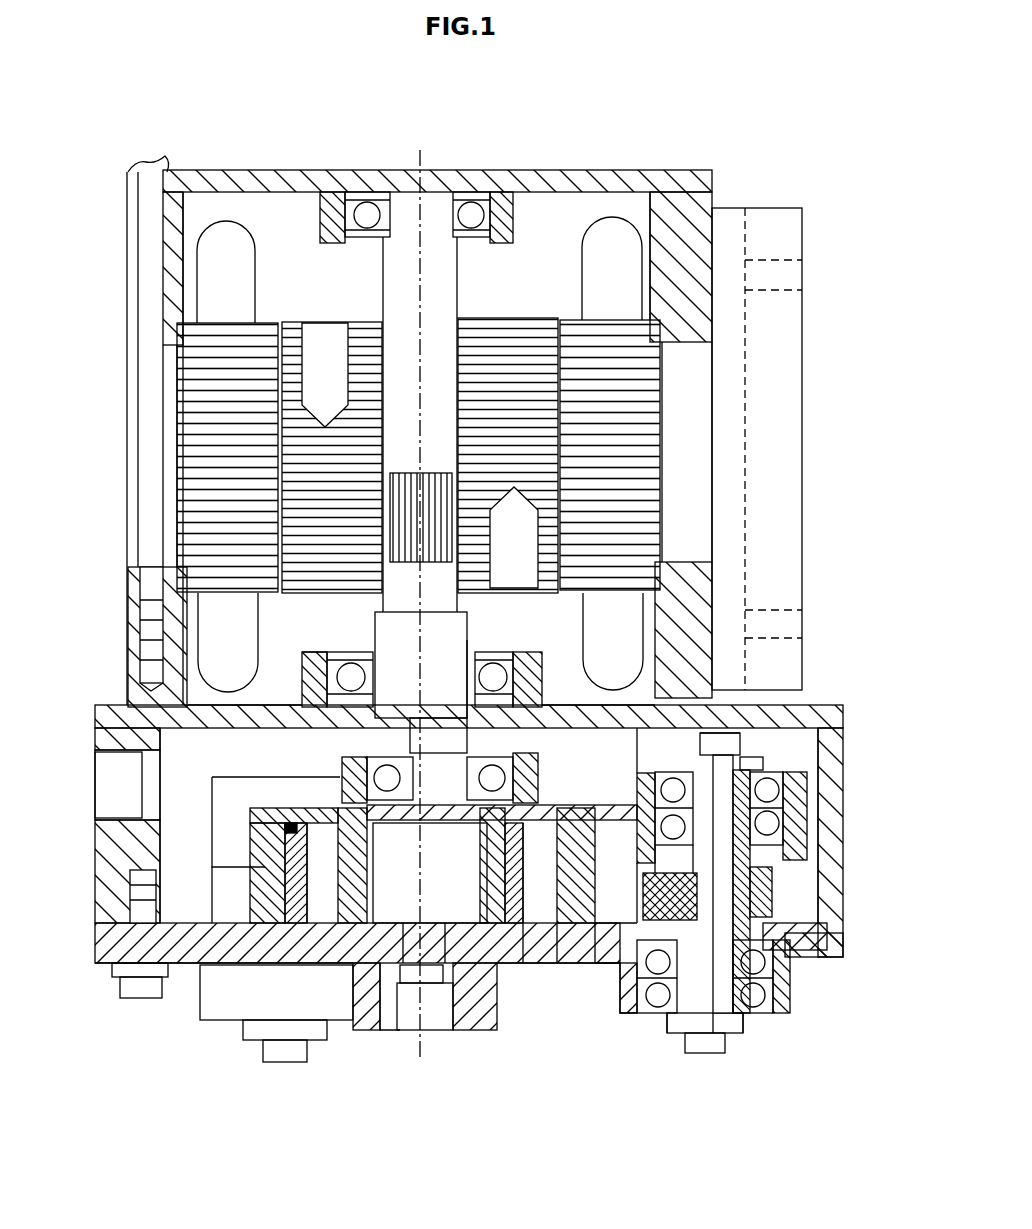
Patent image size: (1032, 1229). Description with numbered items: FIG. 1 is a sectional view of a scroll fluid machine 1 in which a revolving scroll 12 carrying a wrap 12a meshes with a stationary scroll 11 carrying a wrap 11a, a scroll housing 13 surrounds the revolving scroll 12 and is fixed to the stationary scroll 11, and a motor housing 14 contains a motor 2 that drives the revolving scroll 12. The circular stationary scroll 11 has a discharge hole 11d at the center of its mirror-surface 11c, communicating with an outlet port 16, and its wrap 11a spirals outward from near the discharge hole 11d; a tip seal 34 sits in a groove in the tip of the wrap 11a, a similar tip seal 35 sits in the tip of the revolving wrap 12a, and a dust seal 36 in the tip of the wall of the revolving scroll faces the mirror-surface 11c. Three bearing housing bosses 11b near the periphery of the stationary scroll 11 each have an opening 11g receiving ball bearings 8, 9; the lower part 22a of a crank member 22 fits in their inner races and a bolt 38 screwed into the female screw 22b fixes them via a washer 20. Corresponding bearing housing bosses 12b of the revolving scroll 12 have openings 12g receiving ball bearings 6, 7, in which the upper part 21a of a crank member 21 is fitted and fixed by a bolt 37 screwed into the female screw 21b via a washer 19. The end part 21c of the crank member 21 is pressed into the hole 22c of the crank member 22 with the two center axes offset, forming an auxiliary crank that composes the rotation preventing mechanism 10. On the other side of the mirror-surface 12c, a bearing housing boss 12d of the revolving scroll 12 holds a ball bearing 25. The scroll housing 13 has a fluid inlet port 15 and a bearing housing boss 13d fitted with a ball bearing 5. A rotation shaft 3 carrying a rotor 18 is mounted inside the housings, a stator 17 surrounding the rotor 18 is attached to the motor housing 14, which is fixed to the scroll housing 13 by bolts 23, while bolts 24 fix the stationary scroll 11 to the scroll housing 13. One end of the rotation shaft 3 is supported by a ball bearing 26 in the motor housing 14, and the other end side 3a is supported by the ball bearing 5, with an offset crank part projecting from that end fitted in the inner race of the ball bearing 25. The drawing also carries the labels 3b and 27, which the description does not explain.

The scroll fluid machine 1 is at (632, 128).
The motor 2 is at (690, 393).
The rotation shaft 3 is at (440, 290).
The other end side of the rotation shaft 3a is at (415, 695).
The shaft step 3b is at (462, 665).
The ball bearing 5 is at (345, 660).
The ball bearing 6 is at (792, 777).
The ball bearing 7 is at (786, 812).
The ball bearing 8 is at (692, 966).
The ball bearing 9 is at (762, 992).
The rotation preventing mechanism 10 is at (798, 891).
The stationary scroll 11 is at (505, 975).
The stationary scroll wrap 11a is at (386, 1000).
The bearing housing boss of the stationary scroll 11b is at (200, 990).
The mirror-surface of the stationary scroll 11c is at (537, 966).
The discharge hole 11d is at (432, 940).
The opening 11g is at (650, 1012).
The revolving scroll 12 is at (268, 810).
The revolving scroll wrap 12a is at (330, 975).
The bearing housing boss of the revolving scroll 12b is at (225, 870).
The mirror-surface of the revolving scroll 12c is at (305, 840).
The bearing housing boss of the revolving scroll 12d is at (558, 800).
The opening 12g is at (652, 782).
The scroll housing 13 is at (108, 715).
The bearing housing boss 13d is at (305, 665).
The motor housing 14 is at (254, 170).
The inlet port of fluid 15 is at (117, 812).
The outlet port 16 is at (430, 1020).
The stator 17 is at (668, 464).
The rotor 18 is at (530, 318).
The washer 19 is at (742, 746).
The washer 20 is at (250, 1032).
The crank member 21 is at (738, 872).
The upper part of the crank member 21a is at (658, 845).
The female screw 21b is at (594, 966).
The end part of the crank member 21c is at (612, 972).
The crank member 22 is at (774, 906).
The lower part of the crank member 22a is at (682, 1036).
The female screw 22b is at (722, 1022).
The hole 22c is at (792, 940).
The bolts 23 is at (163, 165).
The bolts 24 is at (115, 985).
The ball bearing 25 is at (505, 762).
The ball bearing 26 is at (345, 242).
The bolt 27 is at (128, 475).
The tip seal 34 is at (570, 835).
The tip seal 35 is at (575, 975).
The dust seal 36 is at (215, 1000).
The bolt 37 is at (762, 735).
The bolt 38 is at (283, 1052).